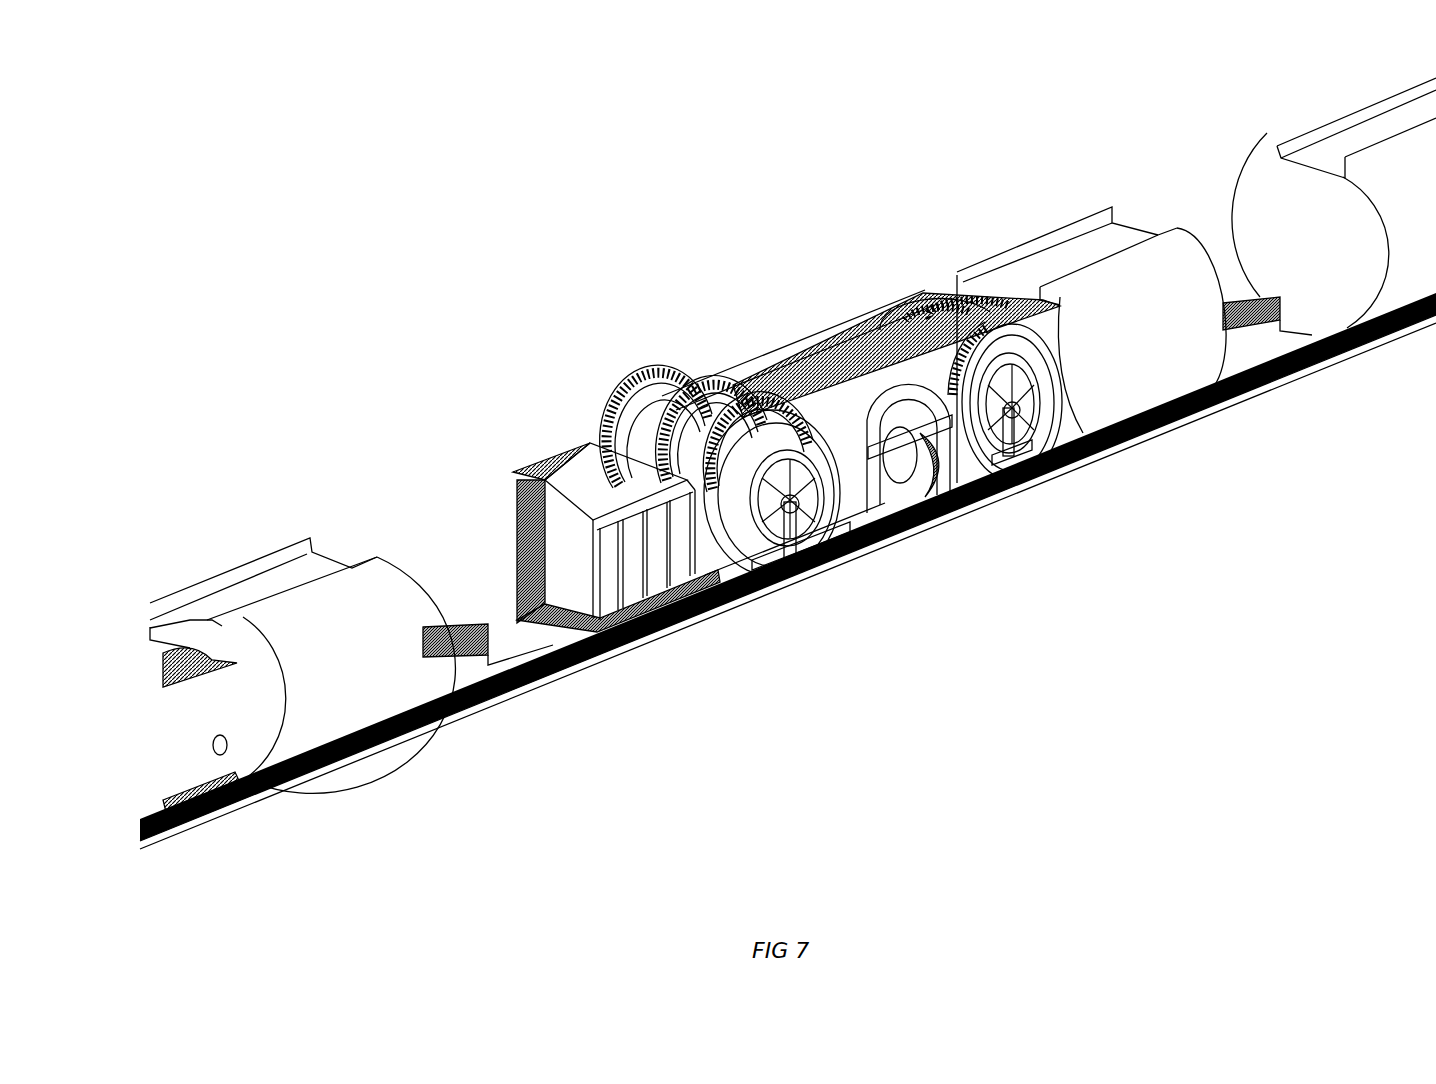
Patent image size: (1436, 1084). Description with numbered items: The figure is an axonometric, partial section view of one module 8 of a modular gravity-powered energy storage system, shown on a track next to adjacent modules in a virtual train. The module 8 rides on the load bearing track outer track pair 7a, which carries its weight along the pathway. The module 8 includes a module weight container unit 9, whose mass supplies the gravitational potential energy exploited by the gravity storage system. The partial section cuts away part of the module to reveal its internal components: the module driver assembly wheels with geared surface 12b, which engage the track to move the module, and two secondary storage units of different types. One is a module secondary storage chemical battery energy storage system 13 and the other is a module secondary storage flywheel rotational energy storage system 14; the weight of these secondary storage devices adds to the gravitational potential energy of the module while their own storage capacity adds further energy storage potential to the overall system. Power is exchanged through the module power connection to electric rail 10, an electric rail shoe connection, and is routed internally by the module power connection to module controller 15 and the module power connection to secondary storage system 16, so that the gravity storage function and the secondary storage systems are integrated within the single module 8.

The load bearing track outer track pair 7a is at (452, 658).
The module with driver assemblies and weight container units 8 is at (1375, 135).
The module weight container unit 9 is at (1163, 347).
The module power connection to electric rail 10 is at (845, 560).
The module driver assembly wheels with geared surface 12b is at (750, 404).
The module secondary storage chemical battery energy storage system 13 is at (637, 573).
The module secondary storage flywheel rotational energy storage system 14 is at (925, 477).
The module power connection to module controller 15 is at (785, 578).
The module power connection to secondary storage system 16 is at (865, 522).